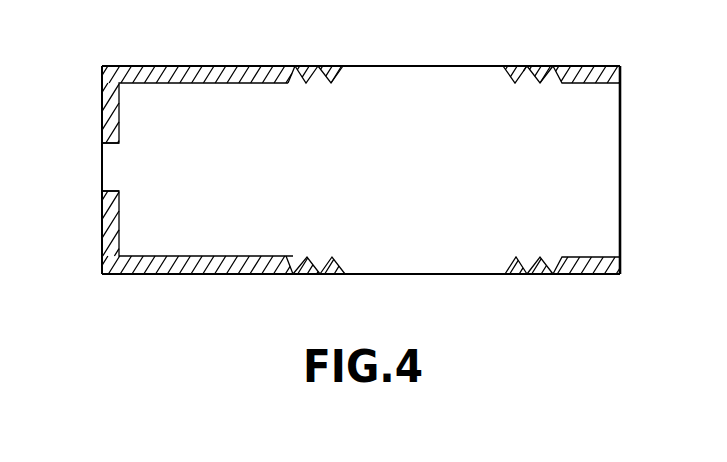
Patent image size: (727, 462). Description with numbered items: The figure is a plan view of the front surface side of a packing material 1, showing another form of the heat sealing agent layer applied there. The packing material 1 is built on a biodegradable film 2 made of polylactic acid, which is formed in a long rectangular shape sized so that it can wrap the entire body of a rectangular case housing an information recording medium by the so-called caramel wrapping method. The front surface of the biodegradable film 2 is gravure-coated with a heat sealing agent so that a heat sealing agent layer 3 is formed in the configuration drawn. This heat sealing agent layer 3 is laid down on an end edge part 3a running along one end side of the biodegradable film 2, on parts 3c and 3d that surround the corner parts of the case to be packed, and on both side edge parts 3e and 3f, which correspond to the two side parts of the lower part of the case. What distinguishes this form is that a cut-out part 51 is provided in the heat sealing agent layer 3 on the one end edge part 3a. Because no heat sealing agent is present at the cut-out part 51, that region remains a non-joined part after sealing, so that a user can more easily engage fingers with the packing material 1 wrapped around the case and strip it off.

The packing material 1 is at (98, 54).
The biodegradable film 2 is at (603, 176).
The heat sealing agent layer 3 is at (118, 265).
The end edge part 3a is at (102, 107).
The corner surrounding part 3c is at (305, 66).
The corner surrounding part 3d is at (336, 66).
The side edge part 3e is at (203, 66).
The side edge part 3f is at (588, 66).
The cut-out part 51 is at (113, 190).